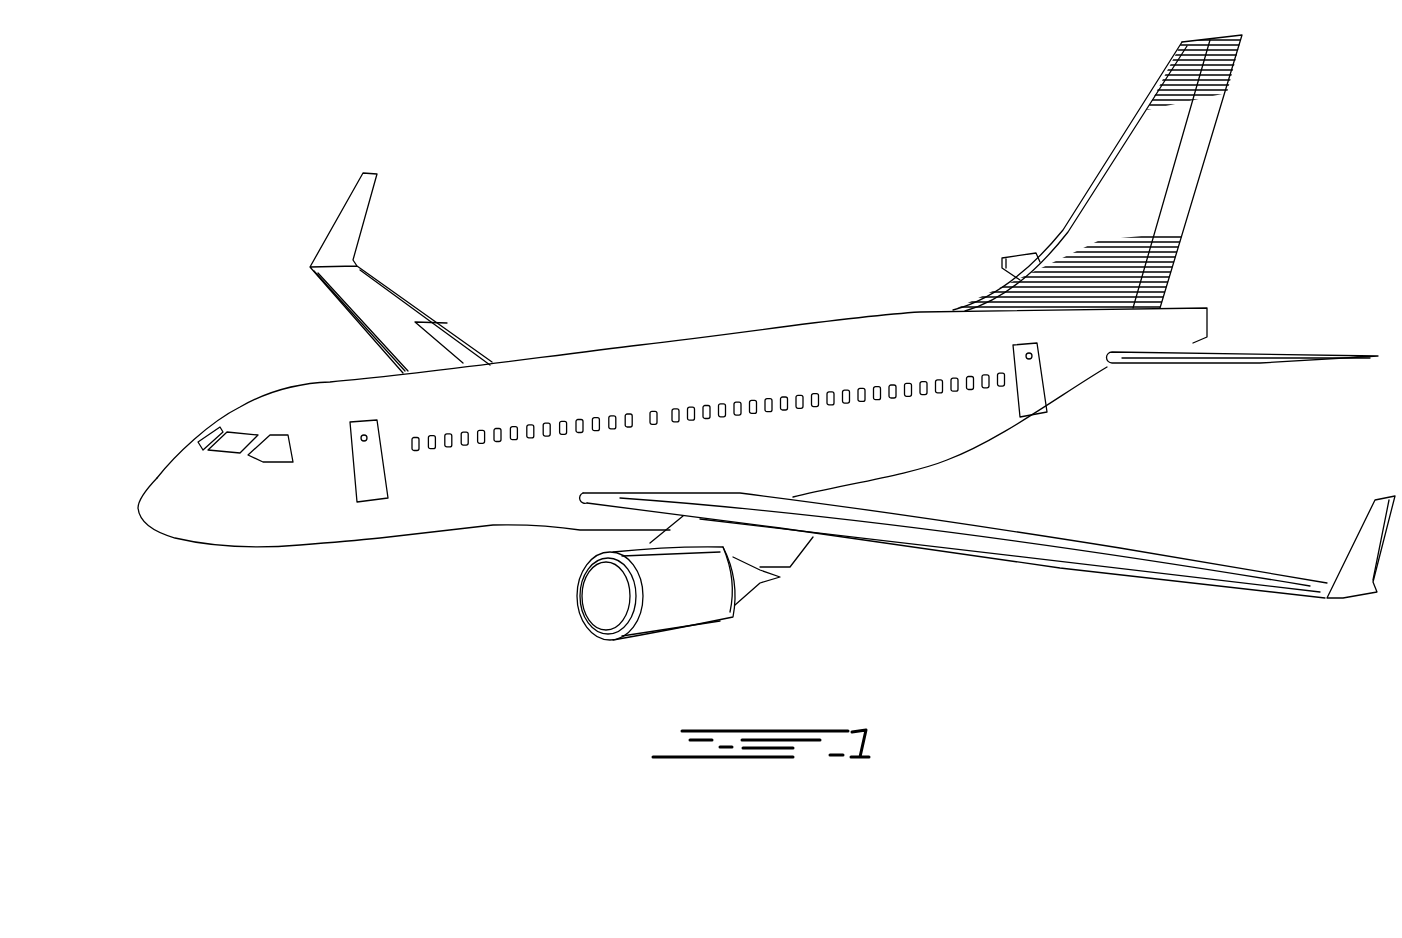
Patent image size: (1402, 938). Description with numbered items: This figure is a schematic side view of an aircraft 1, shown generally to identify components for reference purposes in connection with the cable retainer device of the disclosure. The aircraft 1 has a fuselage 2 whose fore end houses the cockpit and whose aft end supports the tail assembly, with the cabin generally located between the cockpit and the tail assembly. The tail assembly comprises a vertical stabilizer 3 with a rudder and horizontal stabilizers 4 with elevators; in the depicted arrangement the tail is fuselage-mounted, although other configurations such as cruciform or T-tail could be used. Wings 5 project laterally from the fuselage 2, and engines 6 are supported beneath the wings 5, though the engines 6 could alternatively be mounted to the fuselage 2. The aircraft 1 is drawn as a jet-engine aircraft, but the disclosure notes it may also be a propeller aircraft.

The aircraft 1 is at (646, 258).
The fuselage 2 is at (438, 507).
The vertical stabilizer 3 is at (1132, 170).
The horizontal stabilizers 4 is at (1015, 265).
The wings 5 is at (385, 313).
The engines 6 is at (720, 607).